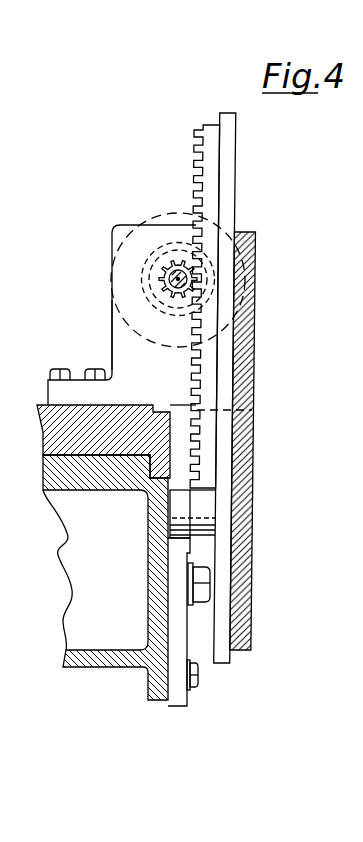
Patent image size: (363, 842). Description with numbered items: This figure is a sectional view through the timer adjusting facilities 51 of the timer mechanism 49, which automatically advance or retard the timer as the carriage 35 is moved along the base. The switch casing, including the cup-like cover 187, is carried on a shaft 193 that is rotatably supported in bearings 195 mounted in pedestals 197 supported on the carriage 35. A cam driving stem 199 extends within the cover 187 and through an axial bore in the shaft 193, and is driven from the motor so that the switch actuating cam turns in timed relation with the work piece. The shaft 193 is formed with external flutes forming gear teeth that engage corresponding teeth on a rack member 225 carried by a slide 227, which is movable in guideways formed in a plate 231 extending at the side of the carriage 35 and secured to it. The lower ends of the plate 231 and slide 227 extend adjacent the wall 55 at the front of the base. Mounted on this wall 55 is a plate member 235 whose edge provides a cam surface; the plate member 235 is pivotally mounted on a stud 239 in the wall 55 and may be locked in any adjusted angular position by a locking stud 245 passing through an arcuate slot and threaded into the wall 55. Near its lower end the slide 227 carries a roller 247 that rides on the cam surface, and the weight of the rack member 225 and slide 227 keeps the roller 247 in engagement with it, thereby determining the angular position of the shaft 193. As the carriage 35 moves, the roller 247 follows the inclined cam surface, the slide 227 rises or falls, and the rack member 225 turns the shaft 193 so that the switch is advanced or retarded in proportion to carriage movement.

The carriage 35 is at (46, 437).
The timer mechanism 49 is at (173, 207).
The facilities for automatically adjusting the timer 51 is at (123, 492).
The lateral wall 55 is at (70, 576).
The cup-like cover 187 is at (146, 224).
The shaft 193 is at (170, 274).
The bearings 195 is at (143, 288).
The pedestals 197 is at (112, 340).
The cam driving stem 199 is at (168, 279).
The rack member 225 is at (204, 146).
The slide 227 is at (232, 168).
The plate 231 is at (250, 430).
The plate member 235 is at (175, 597).
The stud 239 is at (205, 583).
The locking stud 245 is at (198, 683).
The roller 247 is at (175, 525).